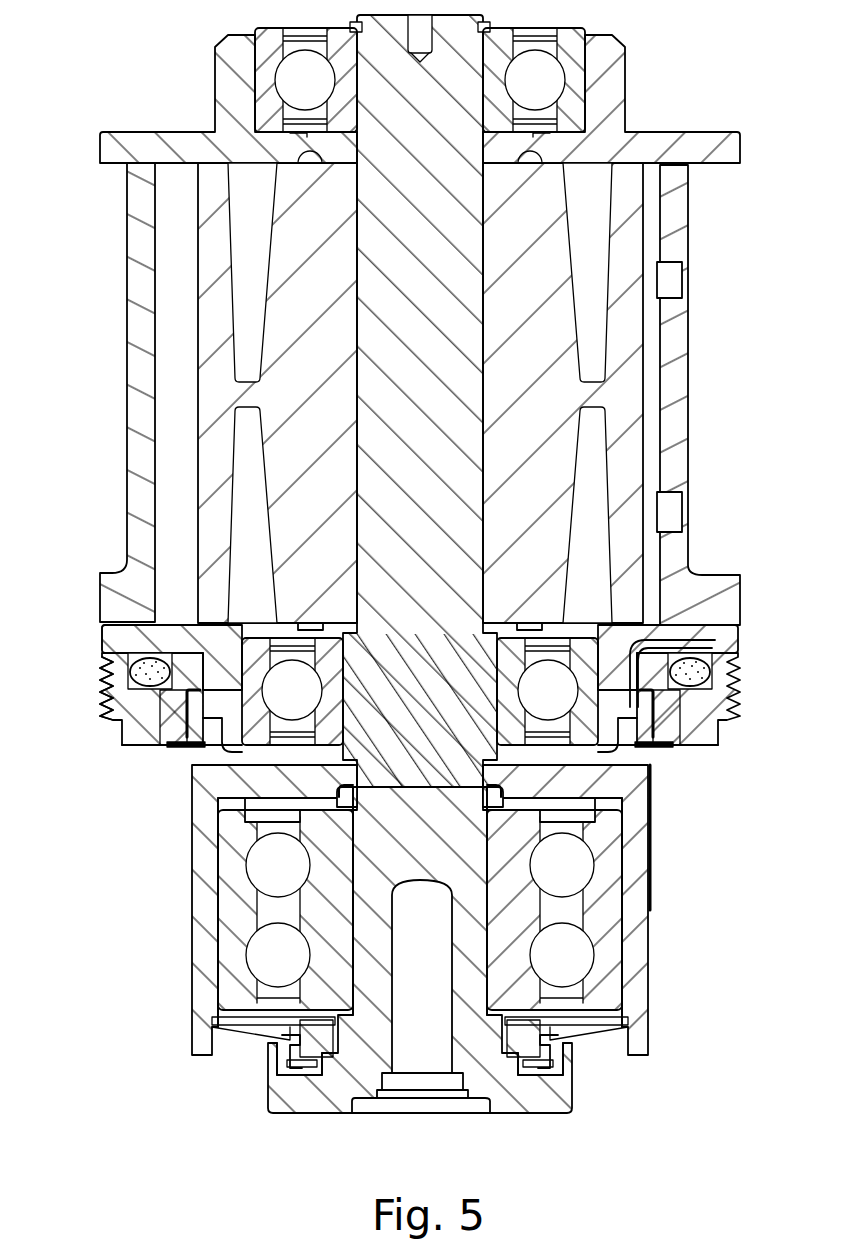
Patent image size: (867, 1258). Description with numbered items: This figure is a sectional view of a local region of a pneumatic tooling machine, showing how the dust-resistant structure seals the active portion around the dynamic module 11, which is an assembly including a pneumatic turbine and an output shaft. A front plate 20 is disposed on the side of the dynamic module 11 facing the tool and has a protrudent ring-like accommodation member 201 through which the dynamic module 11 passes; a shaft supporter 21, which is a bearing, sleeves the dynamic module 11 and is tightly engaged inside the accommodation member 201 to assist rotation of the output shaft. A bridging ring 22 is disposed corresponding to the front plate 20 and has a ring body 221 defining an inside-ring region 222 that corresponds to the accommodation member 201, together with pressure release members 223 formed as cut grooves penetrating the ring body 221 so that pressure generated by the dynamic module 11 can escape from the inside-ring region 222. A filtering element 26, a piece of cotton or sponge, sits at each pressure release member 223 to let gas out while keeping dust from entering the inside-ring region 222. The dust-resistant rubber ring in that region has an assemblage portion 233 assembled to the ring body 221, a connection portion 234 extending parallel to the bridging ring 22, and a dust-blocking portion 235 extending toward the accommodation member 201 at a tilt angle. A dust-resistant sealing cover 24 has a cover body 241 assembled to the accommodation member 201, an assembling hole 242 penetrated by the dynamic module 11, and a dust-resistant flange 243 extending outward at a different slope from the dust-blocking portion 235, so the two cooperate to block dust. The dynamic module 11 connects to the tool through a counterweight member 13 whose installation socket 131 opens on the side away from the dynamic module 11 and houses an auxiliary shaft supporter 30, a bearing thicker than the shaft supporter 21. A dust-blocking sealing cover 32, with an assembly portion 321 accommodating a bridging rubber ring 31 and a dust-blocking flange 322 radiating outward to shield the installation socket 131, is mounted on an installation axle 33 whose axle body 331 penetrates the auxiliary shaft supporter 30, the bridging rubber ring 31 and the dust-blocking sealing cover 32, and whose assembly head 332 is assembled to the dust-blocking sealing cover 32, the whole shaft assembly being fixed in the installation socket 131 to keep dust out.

The dynamic module 11 is at (197, 238).
The counterweight member 13 is at (643, 987).
The installation socket 131 is at (220, 950).
The front plate 20 is at (110, 637).
The accommodation member 201 is at (160, 722).
The shaft supporter 21 is at (240, 640).
The bridging ring 22 is at (100, 672).
The ring body 221 is at (133, 720).
The inside-ring region 222 is at (135, 626).
The pressure release member 223 is at (173, 745).
The assemblage portion 233 is at (680, 737).
The connection portion 234 is at (715, 695).
The dust-blocking portion 235 is at (640, 640).
The dust-resistant sealing cover 24 is at (205, 762).
The cover body 241 is at (623, 810).
The assembling hole 242 is at (590, 850).
The dust-resistant flange 243 is at (650, 770).
The filtering element 26 is at (163, 700).
The auxiliary shaft supporter 30 is at (238, 890).
The bridging rubber ring 31 is at (323, 1087).
The dust-blocking sealing cover 32 is at (627, 1050).
The assembly portion 321 is at (268, 1063).
The dust-blocking flange 322 is at (243, 1027).
The installation axle 33 is at (585, 1083).
The axle body 331 is at (477, 953).
The assembly head 332 is at (520, 1113).